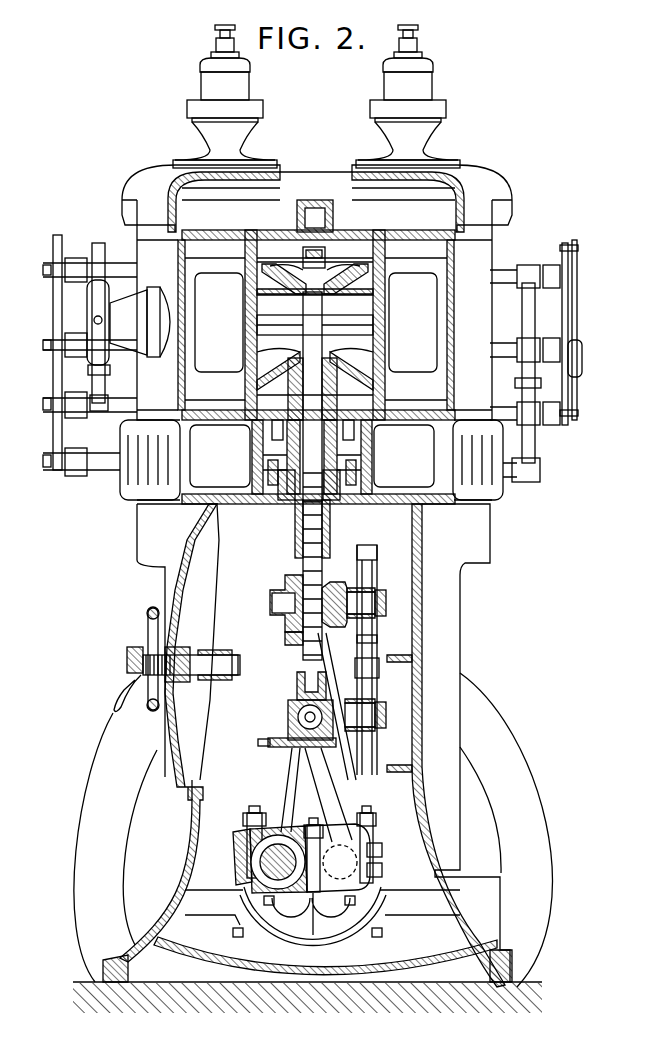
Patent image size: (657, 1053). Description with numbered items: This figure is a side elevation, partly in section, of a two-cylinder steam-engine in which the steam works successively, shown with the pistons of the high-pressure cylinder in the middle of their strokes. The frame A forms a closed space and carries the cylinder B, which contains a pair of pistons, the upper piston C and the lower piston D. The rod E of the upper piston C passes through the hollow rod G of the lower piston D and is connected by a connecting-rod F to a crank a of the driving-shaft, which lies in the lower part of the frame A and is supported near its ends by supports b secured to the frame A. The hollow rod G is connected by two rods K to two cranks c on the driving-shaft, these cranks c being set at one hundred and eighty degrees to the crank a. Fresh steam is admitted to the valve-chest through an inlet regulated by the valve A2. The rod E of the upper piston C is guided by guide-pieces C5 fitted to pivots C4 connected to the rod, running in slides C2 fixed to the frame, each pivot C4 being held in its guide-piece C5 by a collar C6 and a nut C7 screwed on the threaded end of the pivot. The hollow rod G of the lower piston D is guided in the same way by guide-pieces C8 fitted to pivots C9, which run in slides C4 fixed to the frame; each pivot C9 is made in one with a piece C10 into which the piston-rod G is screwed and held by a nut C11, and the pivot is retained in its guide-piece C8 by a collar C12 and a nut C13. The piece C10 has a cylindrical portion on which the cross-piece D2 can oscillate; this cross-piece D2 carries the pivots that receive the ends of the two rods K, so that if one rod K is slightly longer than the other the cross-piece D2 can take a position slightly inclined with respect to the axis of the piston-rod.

The frame A is at (307, 745).
The valve A2 is at (98, 292).
The cylinder B is at (245, 318).
The piston C is at (357, 268).
The piston D is at (353, 357).
The rod E is at (317, 325).
The rod G is at (298, 523).
The slides C2 is at (367, 675).
The slides C4 is at (376, 557).
The guide-pieces C5 is at (367, 700).
The collar C6 is at (335, 740).
The nut C7 is at (363, 730).
The guide-pieces C8 is at (373, 582).
The pivots C9 is at (368, 633).
The piece C10 is at (275, 604).
The nut C11 is at (293, 578).
The collar C12 is at (338, 573).
The nut C13 is at (388, 598).
The cross-piece D2 is at (297, 633).
The connecting-rod F is at (290, 790).
The rods K is at (328, 795).
The crank a is at (250, 862).
The supports b is at (318, 923).
The cranks c is at (365, 866).